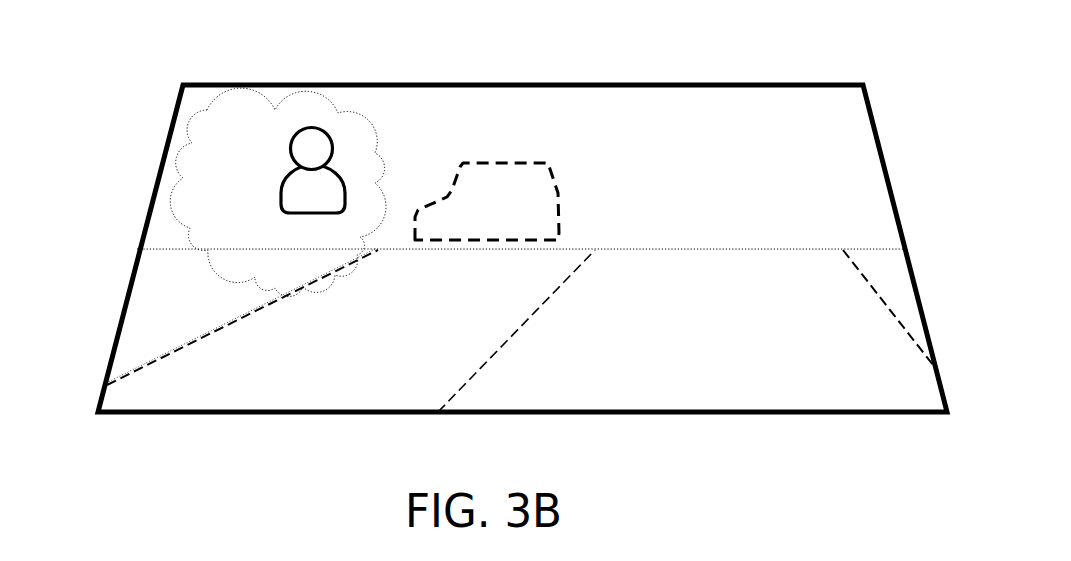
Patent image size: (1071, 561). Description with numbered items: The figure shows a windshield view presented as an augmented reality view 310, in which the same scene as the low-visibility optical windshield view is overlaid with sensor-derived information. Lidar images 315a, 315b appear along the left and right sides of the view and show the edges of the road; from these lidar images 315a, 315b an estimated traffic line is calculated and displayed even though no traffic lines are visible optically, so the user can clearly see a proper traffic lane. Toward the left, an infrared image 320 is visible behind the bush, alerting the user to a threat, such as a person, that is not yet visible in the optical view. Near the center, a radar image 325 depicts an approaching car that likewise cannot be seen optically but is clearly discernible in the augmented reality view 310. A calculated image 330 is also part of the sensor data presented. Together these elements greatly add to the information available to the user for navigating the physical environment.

The augmented reality view 310 is at (662, 150).
The lidar image 315a is at (208, 333).
The lidar image 315b is at (887, 307).
The infrared image 320 is at (342, 172).
The radar image 325 is at (493, 182).
The calculated image 330 is at (515, 335).